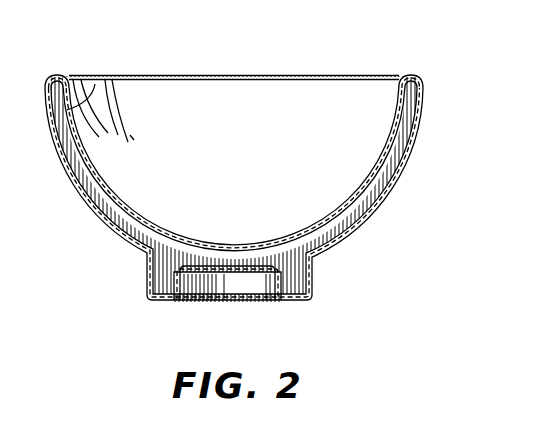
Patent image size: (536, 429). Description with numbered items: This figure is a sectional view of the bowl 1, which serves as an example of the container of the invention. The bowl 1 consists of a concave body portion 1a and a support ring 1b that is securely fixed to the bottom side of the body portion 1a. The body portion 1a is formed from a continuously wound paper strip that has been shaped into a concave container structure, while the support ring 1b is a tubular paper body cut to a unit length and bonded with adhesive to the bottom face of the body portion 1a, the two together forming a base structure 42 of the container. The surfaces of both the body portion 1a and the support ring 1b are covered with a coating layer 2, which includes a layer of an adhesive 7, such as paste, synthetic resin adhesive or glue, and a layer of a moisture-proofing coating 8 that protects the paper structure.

The bowl 1 is at (441, 77).
The body portion 1a is at (93, 79).
The support ring 1b is at (310, 277).
The coating layer 2 is at (232, 236).
The adhesive 7 is at (398, 181).
The moisture-proofing coating 8 is at (358, 223).
The base structure 42 is at (140, 227).